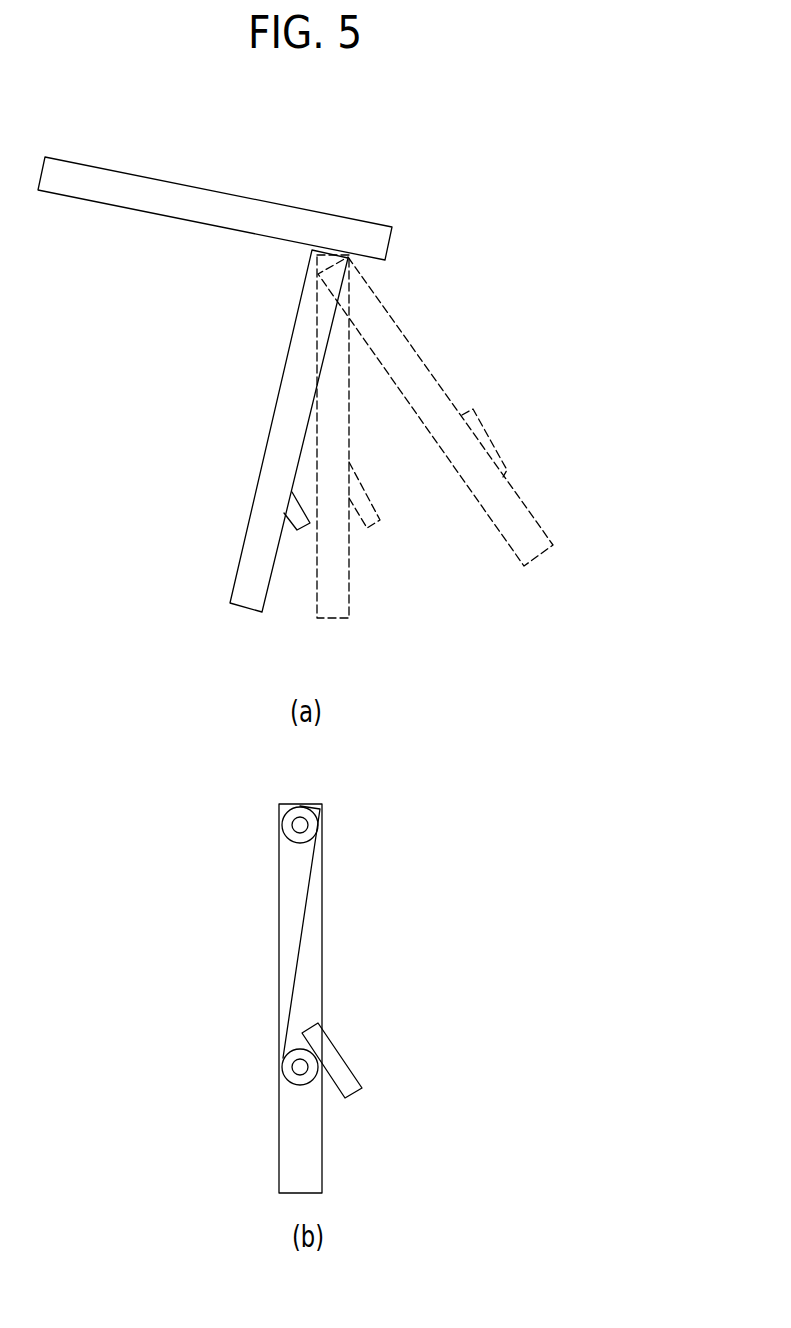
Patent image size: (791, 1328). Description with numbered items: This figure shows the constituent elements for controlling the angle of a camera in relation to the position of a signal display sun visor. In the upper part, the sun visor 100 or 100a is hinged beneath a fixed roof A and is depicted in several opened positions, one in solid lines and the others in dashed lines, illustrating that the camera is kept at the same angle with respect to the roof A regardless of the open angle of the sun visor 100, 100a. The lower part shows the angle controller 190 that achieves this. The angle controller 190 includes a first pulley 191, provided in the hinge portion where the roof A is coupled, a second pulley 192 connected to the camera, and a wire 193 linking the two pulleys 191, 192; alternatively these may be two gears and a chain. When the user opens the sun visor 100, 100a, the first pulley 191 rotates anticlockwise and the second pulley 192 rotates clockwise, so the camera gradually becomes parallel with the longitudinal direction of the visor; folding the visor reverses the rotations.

The roof A is at (308, 191).
The sun visor 100 is at (361, 465).
The sun visor 100a is at (271, 425).
The angle controller 190 is at (326, 998).
The first pulley 191 is at (282, 822).
The second pulley 192 is at (282, 1062).
The wire 193 is at (300, 935).